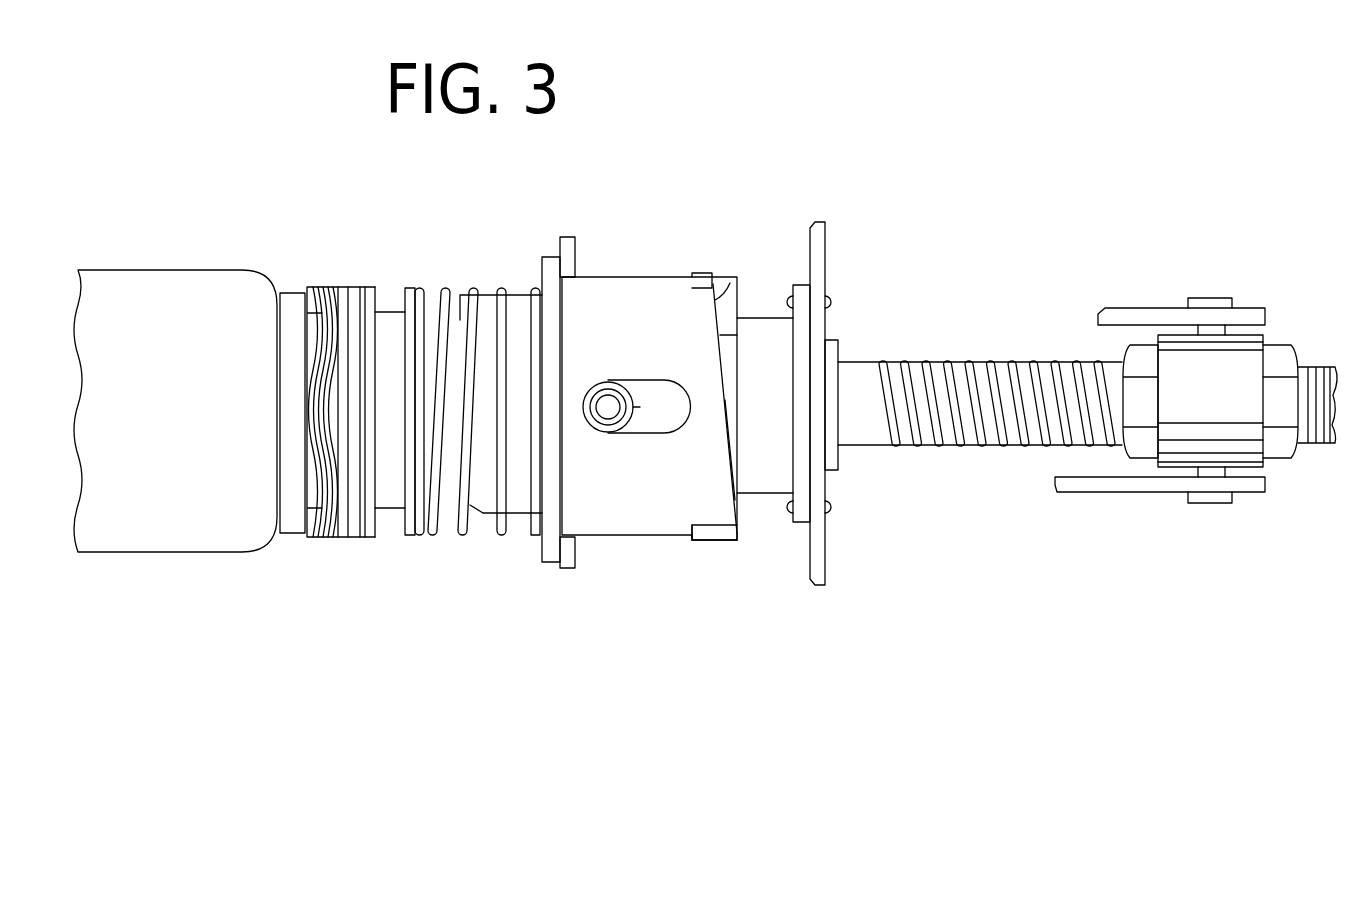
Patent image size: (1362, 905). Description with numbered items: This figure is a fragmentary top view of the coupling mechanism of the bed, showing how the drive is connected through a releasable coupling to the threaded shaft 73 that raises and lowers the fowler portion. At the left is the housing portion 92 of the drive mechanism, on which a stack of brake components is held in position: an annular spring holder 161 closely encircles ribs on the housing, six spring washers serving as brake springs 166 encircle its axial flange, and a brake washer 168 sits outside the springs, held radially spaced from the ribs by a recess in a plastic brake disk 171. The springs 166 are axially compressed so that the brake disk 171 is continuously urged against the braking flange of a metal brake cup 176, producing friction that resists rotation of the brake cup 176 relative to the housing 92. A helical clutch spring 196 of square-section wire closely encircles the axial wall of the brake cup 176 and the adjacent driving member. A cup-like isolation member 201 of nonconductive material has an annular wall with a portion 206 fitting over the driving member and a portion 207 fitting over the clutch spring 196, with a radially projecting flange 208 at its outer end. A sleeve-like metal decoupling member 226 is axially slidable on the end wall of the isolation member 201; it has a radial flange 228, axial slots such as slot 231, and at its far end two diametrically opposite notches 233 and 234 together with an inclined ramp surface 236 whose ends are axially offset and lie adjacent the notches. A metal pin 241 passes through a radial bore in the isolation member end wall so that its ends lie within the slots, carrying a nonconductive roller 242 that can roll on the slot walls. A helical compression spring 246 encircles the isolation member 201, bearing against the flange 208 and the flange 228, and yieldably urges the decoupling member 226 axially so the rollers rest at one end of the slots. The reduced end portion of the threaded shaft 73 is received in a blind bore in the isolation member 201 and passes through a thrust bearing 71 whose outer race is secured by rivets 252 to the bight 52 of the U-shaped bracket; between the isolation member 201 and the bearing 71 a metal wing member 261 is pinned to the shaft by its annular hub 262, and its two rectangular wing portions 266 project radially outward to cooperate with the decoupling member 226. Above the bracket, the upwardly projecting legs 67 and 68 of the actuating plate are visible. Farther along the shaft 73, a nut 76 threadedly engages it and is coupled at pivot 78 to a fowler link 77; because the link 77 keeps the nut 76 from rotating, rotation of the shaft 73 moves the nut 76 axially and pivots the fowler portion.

The housing portion 92 is at (140, 520).
The spring holder 161 is at (290, 300).
The brake springs 166 is at (318, 295).
The brake washer 168 is at (340, 540).
The brake disk 171 is at (352, 542).
The brake cup 176 is at (372, 540).
The helical clutch spring 196 is at (388, 325).
The isolation member 201 is at (470, 397).
The annular wall portion 206 is at (520, 315).
The annular wall portion 207 is at (470, 300).
The annular flange 208 is at (408, 295).
The helical compression spring 246 is at (517, 527).
The annular flange 228 is at (546, 262).
The leg 68 is at (573, 255).
The leg 67 is at (568, 572).
The decoupling member 226 is at (600, 312).
The wing portions 266 is at (710, 270).
The inclined ramp surface 236 is at (738, 310).
The notch 233 is at (720, 278).
The notch 234 is at (705, 542).
The annular hub 262 is at (730, 355).
The wing member 261 is at (750, 542).
The slot 231 is at (655, 385).
The pin 241 is at (608, 412).
The roller 242 is at (640, 410).
The thrust bearing 71 is at (766, 470).
The rivets 252 is at (830, 300).
The bight 52 is at (820, 253).
The threaded shaft 73 is at (955, 450).
The nut 76 is at (1245, 405).
The fowler link 77 is at (1115, 493).
The pivot coupling 78 is at (1210, 503).